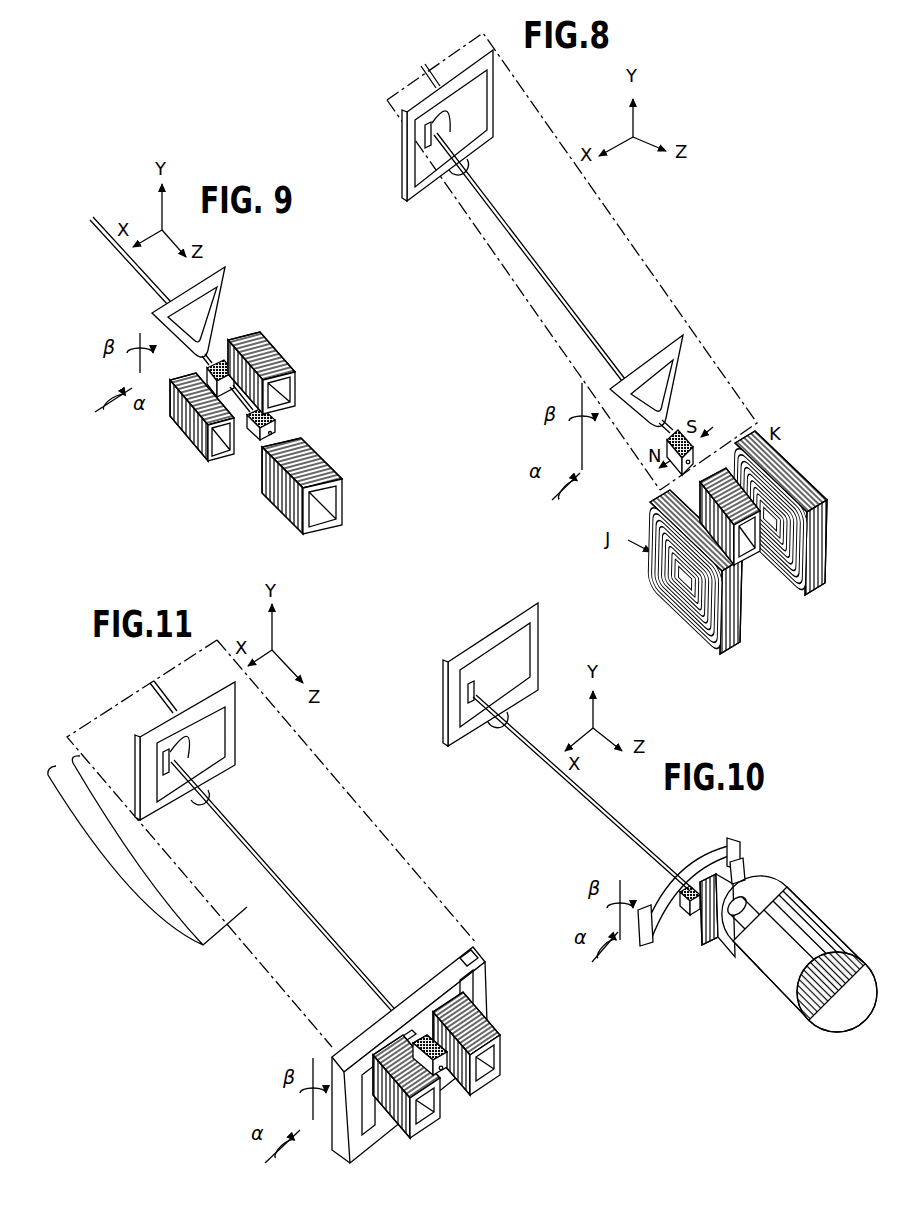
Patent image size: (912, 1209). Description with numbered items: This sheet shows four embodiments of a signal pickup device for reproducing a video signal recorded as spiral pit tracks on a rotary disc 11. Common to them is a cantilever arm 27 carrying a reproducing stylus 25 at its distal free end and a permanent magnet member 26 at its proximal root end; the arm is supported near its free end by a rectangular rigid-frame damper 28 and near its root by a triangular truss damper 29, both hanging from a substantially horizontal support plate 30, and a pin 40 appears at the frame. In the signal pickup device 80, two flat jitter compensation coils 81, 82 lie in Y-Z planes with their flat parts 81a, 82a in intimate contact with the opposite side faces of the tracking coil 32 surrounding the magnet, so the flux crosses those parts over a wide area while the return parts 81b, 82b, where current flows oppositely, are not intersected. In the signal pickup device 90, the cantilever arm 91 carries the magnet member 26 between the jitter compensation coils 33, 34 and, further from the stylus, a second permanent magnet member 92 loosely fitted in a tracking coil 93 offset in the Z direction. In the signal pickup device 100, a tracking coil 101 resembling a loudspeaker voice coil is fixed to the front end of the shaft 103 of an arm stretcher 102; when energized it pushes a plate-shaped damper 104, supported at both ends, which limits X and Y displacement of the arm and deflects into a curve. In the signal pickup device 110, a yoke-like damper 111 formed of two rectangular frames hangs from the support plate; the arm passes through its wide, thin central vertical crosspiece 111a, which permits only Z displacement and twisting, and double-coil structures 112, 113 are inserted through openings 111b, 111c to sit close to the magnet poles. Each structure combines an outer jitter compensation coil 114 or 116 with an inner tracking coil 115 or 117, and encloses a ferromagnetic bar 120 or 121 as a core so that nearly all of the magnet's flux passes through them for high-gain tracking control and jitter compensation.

In FIG. 11, the rotary disc 11 is at (152, 898).
In FIG. 8, the reproducing stylus 25 is at (425, 135).
In FIG. 10, the reproducing stylus 25 is at (468, 689).
In FIG. 11, the reproducing stylus 25 is at (163, 762).
In FIG. 8, the permanent magnet member 26 is at (668, 477).
In FIG. 9, the permanent magnet member 26 is at (218, 357).
In FIG. 10, the permanent magnet member 26 is at (688, 917).
In FIG. 11, the permanent magnet member 26 is at (412, 1025).
In FIG. 8, the cantilever arm 27 is at (524, 256).
In FIG. 10, the cantilever arm 27 is at (591, 806).
In FIG. 11, the cantilever arm 27 is at (270, 872).
In FIG. 8, the damper 28 is at (490, 82).
In FIG. 10, the damper 28 is at (519, 699).
In FIG. 11, the damper 28 is at (238, 745).
In FIG. 8, the damper 29 is at (680, 360).
In FIG. 9, the damper 29 is at (222, 291).
In FIG. 8, the support plate 30 is at (652, 259).
In FIG. 11, the support plate 30 is at (410, 858).
In FIG. 8, the tracking coil 32 is at (750, 556).
In FIG. 9, the jitter compensation coil 33 is at (194, 452).
In FIG. 9, the jitter compensation coil 34 is at (276, 355).
In FIG. 8, the pivot pin 40 is at (426, 69).
In FIG. 11, the pivot pin 40 is at (153, 703).
In FIG. 8, the signal pickup device 80 is at (668, 213).
In FIG. 8, the jitter compensation coil 81 is at (684, 589).
In FIG. 8, the flat part 81a is at (662, 568).
In FIG. 8, the coil part 81b is at (722, 622).
In FIG. 8, the jitter compensation coil 82 is at (806, 519).
In FIG. 8, the flat part 82a is at (758, 484).
In FIG. 8, the coil part 82b is at (806, 564).
In FIG. 9, the signal pickup device 90 is at (291, 257).
In FIG. 9, the cantilever arm 91 is at (127, 270).
In FIG. 9, the second permanent magnet member 92 is at (278, 423).
In FIG. 9, the tracking coil 93 is at (318, 468).
In FIG. 10, the signal pickup device 100 is at (533, 778).
In FIG. 10, the tracking coil 101 is at (708, 940).
In FIG. 10, the arm stretcher 102 is at (814, 908).
In FIG. 10, the shaft 103 is at (753, 893).
In FIG. 10, the damper 104 is at (688, 872).
In FIG. 11, the signal pickup device 110 is at (377, 783).
In FIG. 11, the damper 111 is at (444, 1063).
In FIG. 11, the central vertical crosspiece 111a is at (418, 1036).
In FIG. 11, the opening 111b is at (376, 1143).
In FIG. 11, the opening 111c is at (471, 992).
In FIG. 11, the double-coil structure 112 is at (437, 1118).
In FIG. 11, the double-coil structure 113 is at (502, 1063).
In FIG. 11, the outer coil 114 is at (398, 1138).
In FIG. 11, the inner coil 115 is at (423, 1137).
In FIG. 11, the outer coil 116 is at (474, 1084).
In FIG. 11, the inner coil 117 is at (481, 1078).
In FIG. 11, the ferromagnetic bar 120 is at (433, 1118).
In FIG. 11, the ferromagnetic bar 121 is at (496, 1064).